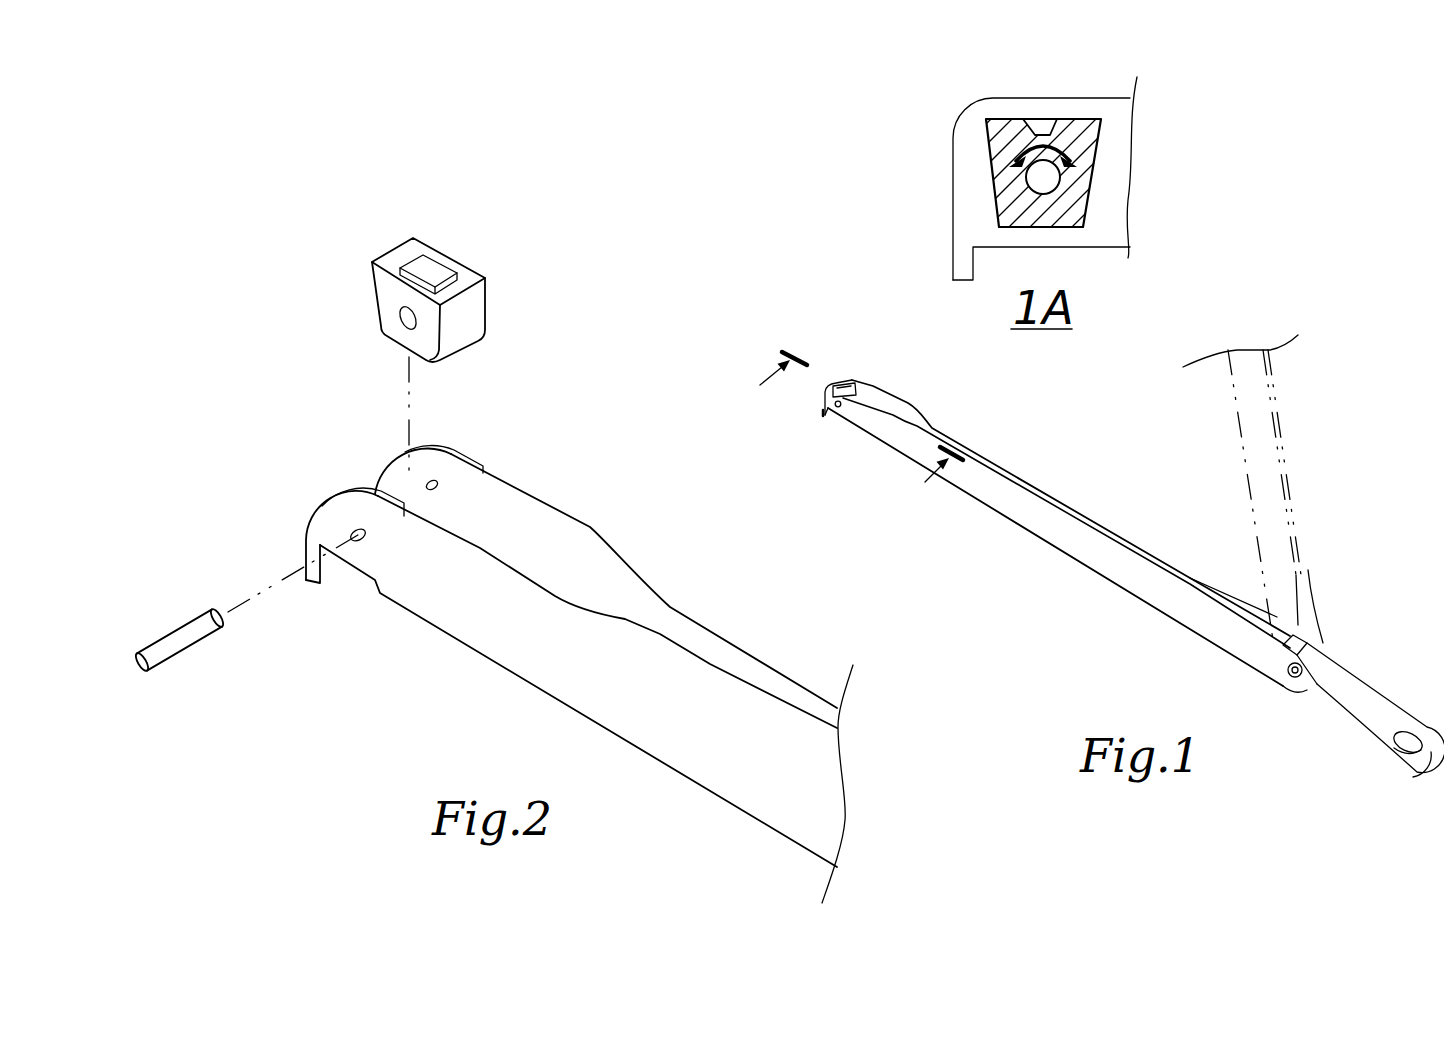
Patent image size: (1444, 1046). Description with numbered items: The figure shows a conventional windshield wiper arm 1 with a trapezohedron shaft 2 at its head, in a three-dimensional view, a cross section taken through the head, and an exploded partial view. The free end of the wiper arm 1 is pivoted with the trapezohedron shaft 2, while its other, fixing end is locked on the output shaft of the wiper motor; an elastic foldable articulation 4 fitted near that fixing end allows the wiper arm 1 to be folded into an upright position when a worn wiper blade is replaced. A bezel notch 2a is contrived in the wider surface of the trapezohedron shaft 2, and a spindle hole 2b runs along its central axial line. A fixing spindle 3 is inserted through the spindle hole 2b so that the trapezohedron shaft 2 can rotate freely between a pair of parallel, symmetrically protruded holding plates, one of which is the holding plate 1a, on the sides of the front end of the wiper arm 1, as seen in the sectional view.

In FIG. 1, the wiper arm 1 is at (1055, 515).
In FIG. 2, the wiper arm 1 is at (577, 532).
In FIG. 1A, the holding plate 1a is at (973, 190).
In FIG. 2, the holding plate 1a is at (333, 518).
In FIG. 1A, the trapezohedron shaft 2 is at (1042, 126).
In FIG. 1, the trapezohedron shaft 2 is at (842, 383).
In FIG. 2, the trapezohedron shaft 2 is at (428, 268).
In FIG. 1A, the bezel notch 2a is at (1043, 127).
In FIG. 2, the bezel notch 2a is at (435, 277).
In FIG. 2, the spindle hole 2b is at (405, 322).
In FIG. 1A, the fixing spindle 3 is at (1040, 175).
In FIG. 1, the fixing spindle 3 is at (836, 408).
In FIG. 2, the fixing spindle 3 is at (180, 648).
In FIG. 1, the elastic foldable articulation 4 is at (1291, 688).